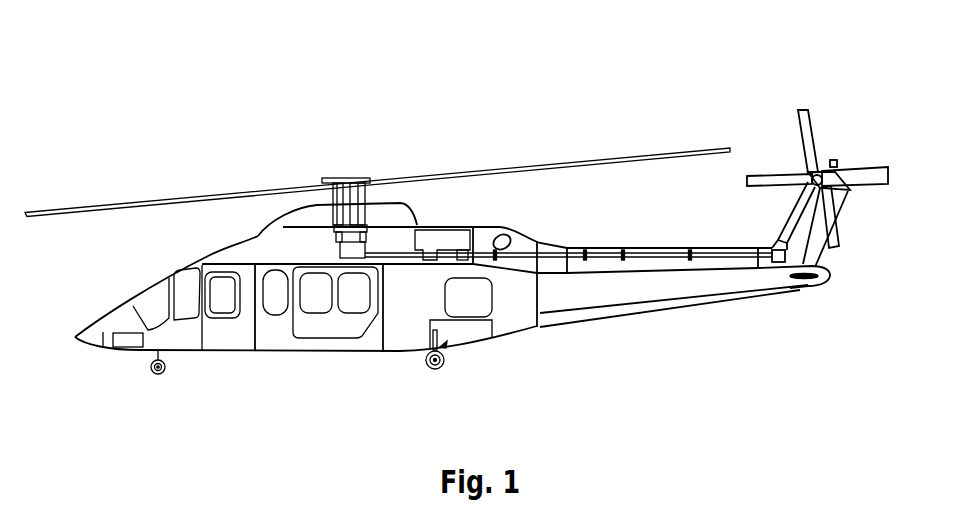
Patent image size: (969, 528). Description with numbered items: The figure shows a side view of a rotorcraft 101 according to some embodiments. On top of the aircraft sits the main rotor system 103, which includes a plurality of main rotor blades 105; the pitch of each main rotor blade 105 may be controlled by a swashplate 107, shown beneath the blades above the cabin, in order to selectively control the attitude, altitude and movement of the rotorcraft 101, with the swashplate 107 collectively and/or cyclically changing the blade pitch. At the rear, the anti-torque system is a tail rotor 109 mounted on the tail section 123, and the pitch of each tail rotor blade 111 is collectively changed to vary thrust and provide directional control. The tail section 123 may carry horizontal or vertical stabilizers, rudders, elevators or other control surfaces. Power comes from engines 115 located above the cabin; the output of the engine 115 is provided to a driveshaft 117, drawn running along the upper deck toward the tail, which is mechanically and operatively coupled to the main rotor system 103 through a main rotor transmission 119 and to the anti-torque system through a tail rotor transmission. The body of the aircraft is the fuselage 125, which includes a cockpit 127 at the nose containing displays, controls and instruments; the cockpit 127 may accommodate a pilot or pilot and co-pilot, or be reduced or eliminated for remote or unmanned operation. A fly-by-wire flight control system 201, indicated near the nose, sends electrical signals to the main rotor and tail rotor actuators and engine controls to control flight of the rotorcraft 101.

The rotorcraft 101 is at (229, 65).
The main rotor system 103 is at (373, 147).
The main rotor blade 105 is at (618, 153).
The swashplate 107 is at (363, 225).
The tail rotor 109 is at (825, 78).
The tail rotor blade 111 is at (882, 167).
The engine 115 is at (458, 228).
The driveshaft 117 is at (397, 255).
The main rotor transmission 119 is at (340, 248).
The tail section 123 is at (667, 303).
The fuselage 125 is at (300, 347).
The cockpit 127 is at (140, 290).
The fly-by-wire flight control system 201 is at (113, 340).